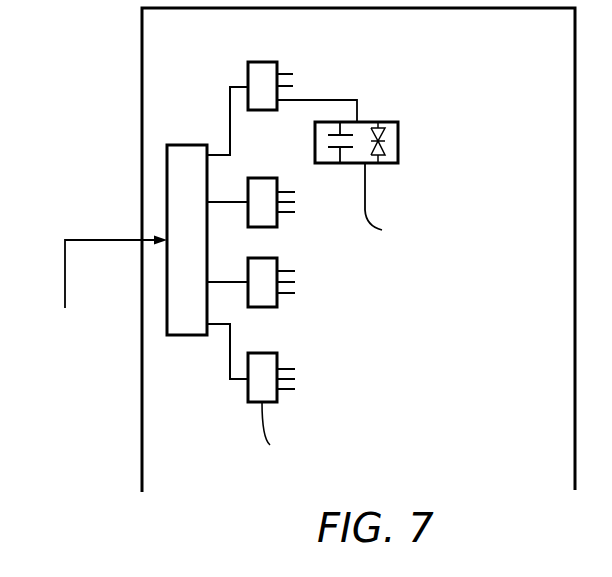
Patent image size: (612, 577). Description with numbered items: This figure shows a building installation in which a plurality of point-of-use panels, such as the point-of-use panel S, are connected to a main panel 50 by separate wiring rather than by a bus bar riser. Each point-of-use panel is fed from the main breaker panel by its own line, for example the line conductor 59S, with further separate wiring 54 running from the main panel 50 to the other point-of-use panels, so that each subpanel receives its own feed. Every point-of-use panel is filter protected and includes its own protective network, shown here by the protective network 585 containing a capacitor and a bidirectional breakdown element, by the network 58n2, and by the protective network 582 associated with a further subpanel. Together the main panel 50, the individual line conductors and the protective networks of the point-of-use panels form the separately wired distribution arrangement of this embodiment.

The main panel 50 is at (180, 183).
The wire from main panel to subpanel 54 is at (228, 103).
The point-of-use panel S is at (265, 75).
The protective network 585 is at (398, 120).
The protective network 58n2 is at (397, 205).
The line conductor 59S is at (233, 200).
The protective network 582 is at (275, 353).